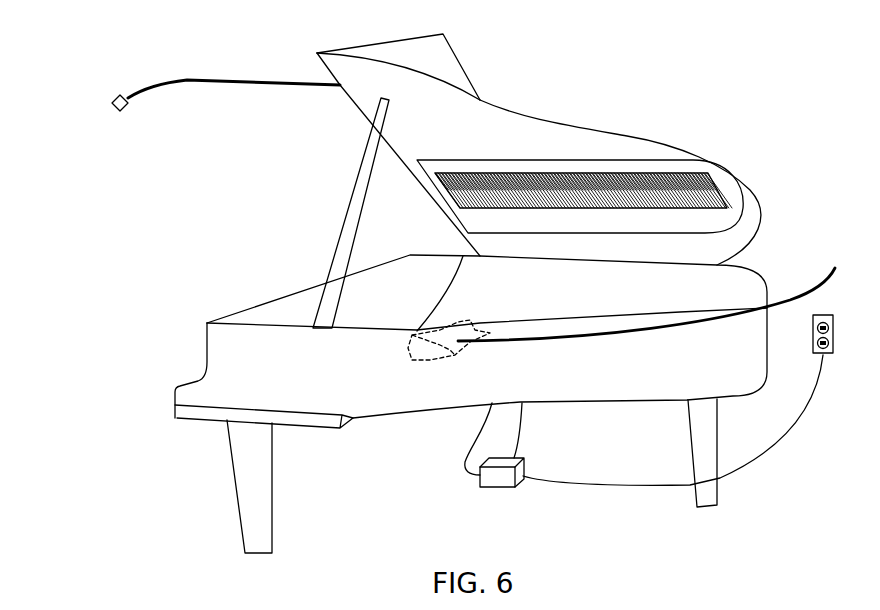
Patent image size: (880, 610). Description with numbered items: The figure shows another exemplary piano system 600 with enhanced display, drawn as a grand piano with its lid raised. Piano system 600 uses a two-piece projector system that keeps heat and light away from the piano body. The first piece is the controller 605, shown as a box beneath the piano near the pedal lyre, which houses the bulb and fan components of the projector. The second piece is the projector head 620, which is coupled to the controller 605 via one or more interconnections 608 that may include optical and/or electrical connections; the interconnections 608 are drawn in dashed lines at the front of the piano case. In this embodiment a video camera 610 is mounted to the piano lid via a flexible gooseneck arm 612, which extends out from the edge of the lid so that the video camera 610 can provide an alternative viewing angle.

The piano system 600 is at (103, 38).
The flexible gooseneck arm 612 is at (187, 80).
The video camera 610 is at (126, 106).
The projector head 620 is at (836, 265).
The interconnections 608 is at (520, 408).
The controller 605 is at (495, 480).